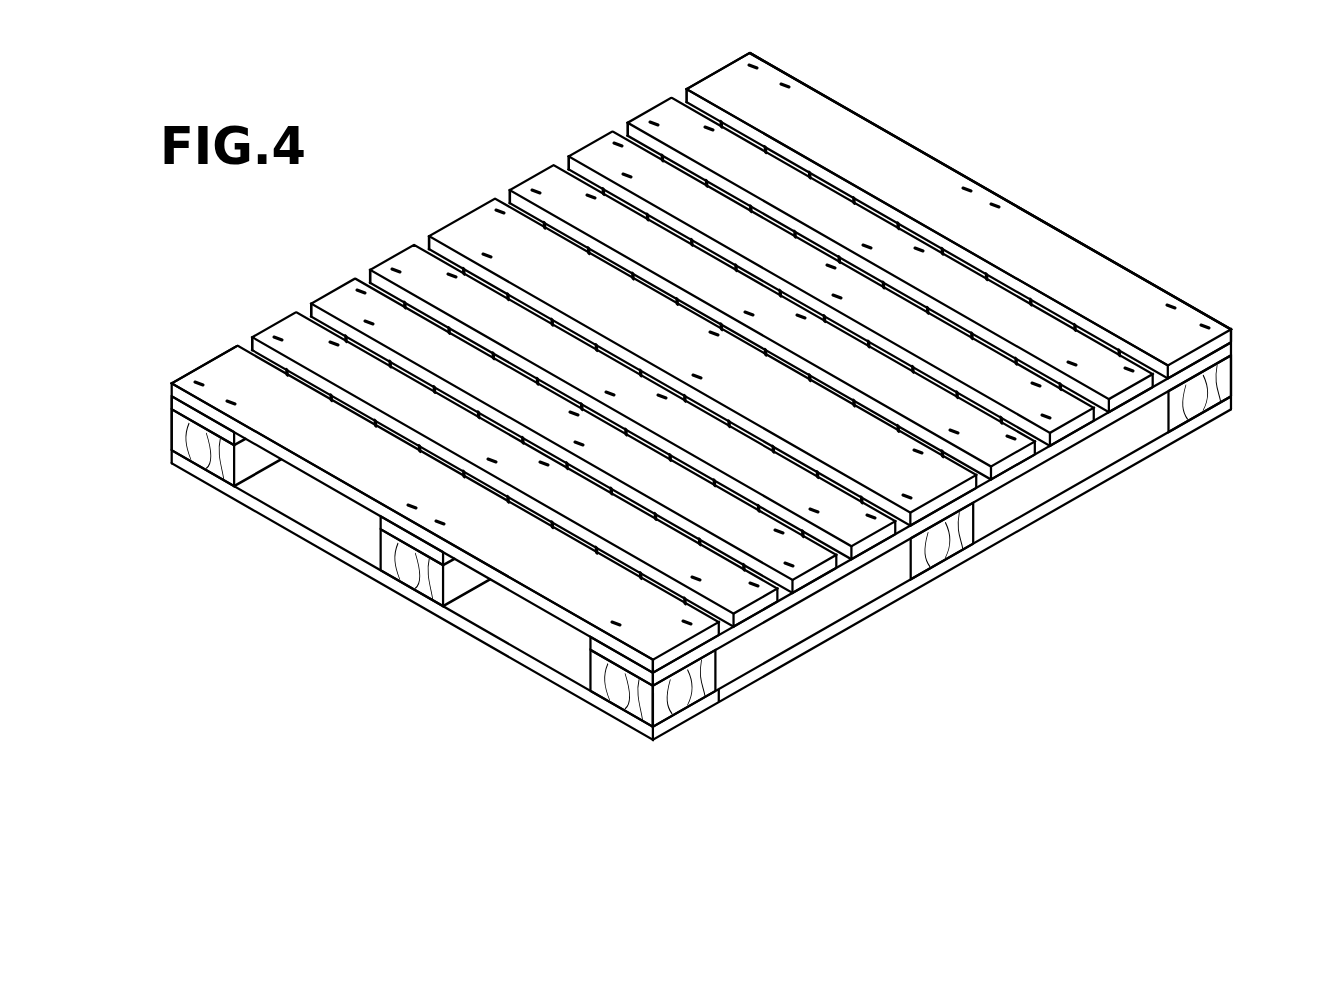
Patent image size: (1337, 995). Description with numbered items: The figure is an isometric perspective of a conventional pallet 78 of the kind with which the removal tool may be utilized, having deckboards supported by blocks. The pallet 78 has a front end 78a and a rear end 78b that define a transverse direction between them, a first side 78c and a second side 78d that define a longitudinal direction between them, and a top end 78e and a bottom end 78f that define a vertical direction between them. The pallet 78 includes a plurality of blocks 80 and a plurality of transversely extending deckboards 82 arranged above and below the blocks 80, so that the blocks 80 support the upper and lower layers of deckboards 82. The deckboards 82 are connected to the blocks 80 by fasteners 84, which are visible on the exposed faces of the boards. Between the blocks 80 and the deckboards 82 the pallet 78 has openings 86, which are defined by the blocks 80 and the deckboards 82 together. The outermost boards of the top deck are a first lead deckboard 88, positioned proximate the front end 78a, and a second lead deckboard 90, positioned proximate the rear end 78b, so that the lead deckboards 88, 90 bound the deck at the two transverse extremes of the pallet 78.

The pallet 78 is at (1082, 72).
The front end 78a is at (274, 608).
The rear end 78b is at (1116, 214).
The first side 78c is at (452, 150).
The second side 78d is at (1040, 582).
The top end 78e is at (846, 135).
The bottom end 78f is at (804, 700).
The blocks 80 is at (203, 458).
The deckboards 82 is at (675, 102).
The fasteners 84 is at (756, 68).
The openings 86 is at (318, 500).
The first lead deckboard 88 is at (231, 381).
The second lead deckboard 90 is at (1112, 285).